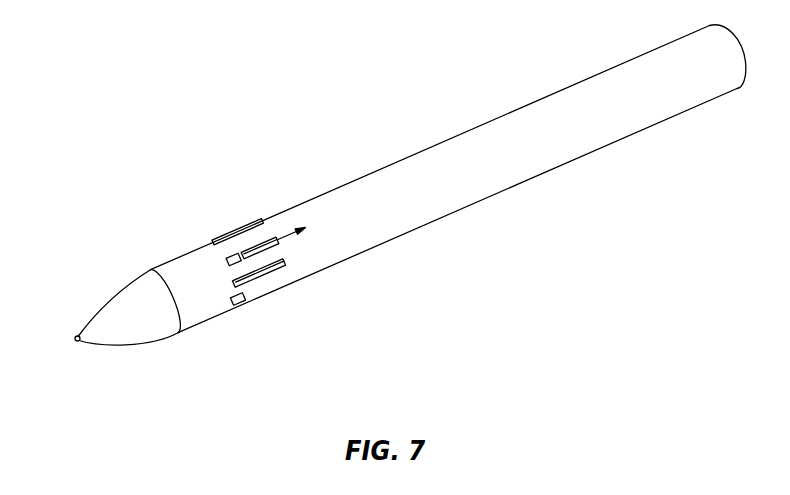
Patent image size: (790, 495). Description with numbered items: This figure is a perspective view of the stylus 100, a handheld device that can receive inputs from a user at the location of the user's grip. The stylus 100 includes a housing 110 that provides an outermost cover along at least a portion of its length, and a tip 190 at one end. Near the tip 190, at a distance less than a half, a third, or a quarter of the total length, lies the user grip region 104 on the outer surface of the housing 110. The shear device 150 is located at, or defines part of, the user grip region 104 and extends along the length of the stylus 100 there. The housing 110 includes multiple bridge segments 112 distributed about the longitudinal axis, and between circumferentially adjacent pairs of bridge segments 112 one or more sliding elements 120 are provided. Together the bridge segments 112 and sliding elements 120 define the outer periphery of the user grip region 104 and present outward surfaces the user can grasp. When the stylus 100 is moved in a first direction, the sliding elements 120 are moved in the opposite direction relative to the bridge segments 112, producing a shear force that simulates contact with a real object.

The stylus 100 is at (410, 222).
The user grip region 104 is at (214, 240).
The housing 110 is at (486, 200).
The bridge segments 112 is at (234, 264).
The sliding elements 120 is at (243, 258).
The shear device 150 is at (264, 206).
The tip 190 is at (105, 345).